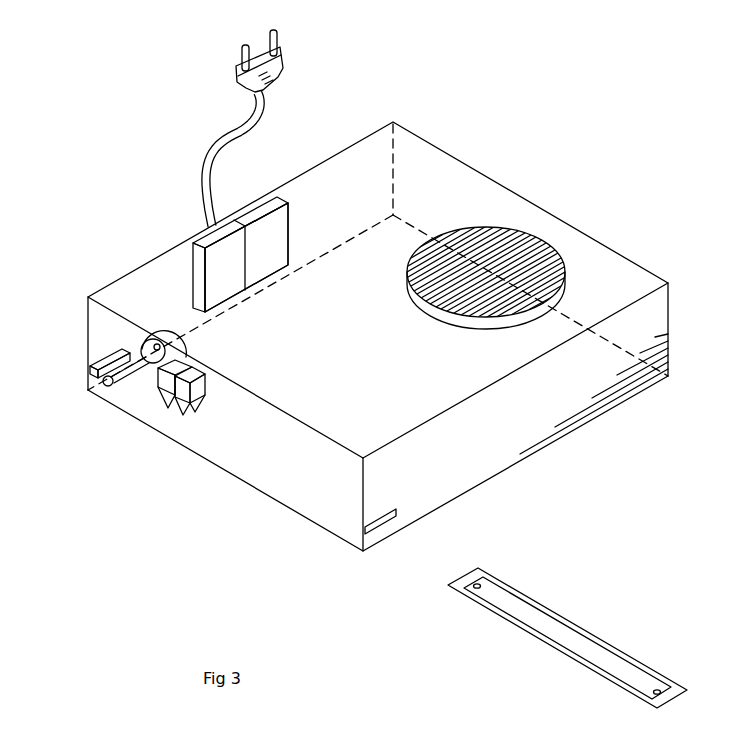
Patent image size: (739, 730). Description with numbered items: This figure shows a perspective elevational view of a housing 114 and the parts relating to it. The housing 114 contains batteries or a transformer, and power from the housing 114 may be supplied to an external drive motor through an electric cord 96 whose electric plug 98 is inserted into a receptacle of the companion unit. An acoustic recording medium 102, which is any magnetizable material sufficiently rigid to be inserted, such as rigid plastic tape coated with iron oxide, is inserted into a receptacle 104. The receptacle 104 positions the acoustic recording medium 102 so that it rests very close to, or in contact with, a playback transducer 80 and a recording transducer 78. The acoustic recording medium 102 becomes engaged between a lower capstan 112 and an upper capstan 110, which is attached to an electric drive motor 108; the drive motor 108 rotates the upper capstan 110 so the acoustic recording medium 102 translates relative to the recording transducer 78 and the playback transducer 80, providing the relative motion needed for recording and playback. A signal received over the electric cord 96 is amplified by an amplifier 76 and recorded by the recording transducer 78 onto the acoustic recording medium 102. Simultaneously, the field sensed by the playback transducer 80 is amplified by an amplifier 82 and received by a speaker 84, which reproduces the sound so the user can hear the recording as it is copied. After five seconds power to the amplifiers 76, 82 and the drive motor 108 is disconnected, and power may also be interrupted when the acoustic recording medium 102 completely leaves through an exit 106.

The electric signal amplifier 76 is at (289, 225).
The recording transducer 78 is at (194, 414).
The playback transducer 80 is at (157, 397).
The electric signal amplifier 82 is at (197, 270).
The acoustic speaker 84 is at (460, 225).
The electric cord 96 is at (207, 156).
The electric plug 98 is at (282, 78).
The acoustic recording medium 102 is at (550, 610).
The receptacle 104 is at (388, 524).
The exit 106 is at (93, 364).
The electric drive motor 108 is at (170, 329).
The upper capstan 110 is at (142, 344).
The lower capstan 112 is at (107, 387).
The housing 114 is at (586, 233).